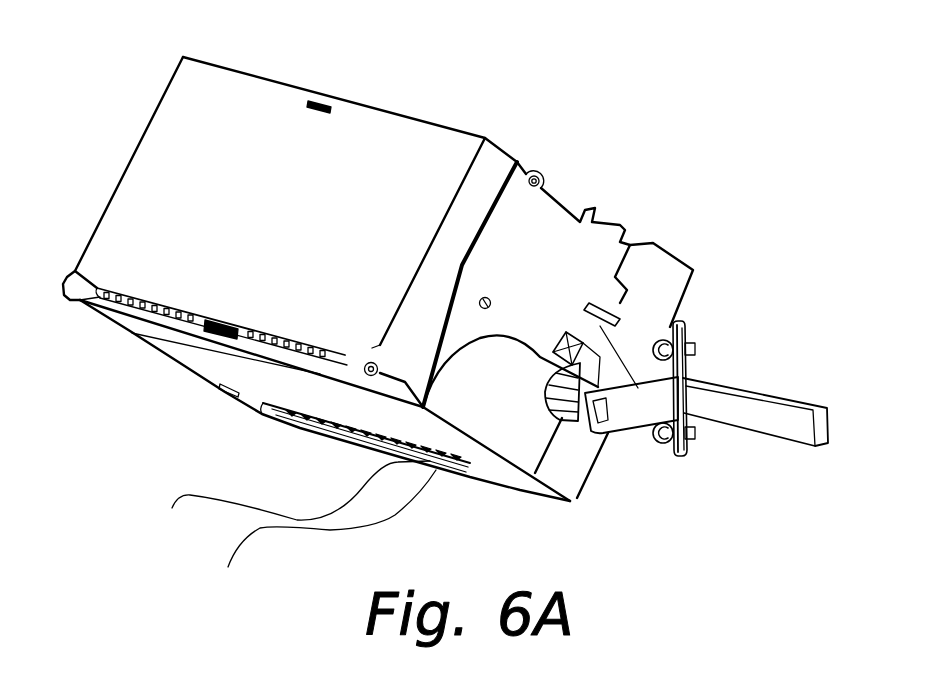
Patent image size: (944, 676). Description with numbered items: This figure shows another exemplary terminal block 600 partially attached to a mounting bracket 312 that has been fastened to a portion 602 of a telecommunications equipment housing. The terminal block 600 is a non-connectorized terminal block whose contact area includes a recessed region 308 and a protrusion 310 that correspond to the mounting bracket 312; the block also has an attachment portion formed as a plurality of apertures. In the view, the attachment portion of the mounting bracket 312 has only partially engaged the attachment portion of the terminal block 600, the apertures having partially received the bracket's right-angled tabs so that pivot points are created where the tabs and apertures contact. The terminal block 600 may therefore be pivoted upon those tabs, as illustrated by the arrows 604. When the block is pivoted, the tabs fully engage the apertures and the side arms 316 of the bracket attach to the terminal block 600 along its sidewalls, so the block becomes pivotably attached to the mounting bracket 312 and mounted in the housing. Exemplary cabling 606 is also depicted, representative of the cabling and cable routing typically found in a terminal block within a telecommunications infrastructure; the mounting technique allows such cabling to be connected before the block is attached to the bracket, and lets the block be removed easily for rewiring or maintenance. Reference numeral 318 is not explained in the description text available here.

The terminal block 600 is at (127, 47).
The portion of a telecommunications equipment housing 602 is at (792, 432).
The arrows 604 is at (68, 437).
The cabling 606 is at (371, 526).
The recessed region 308 is at (607, 358).
The protrusion 310 is at (578, 347).
The mounting bracket 312 is at (680, 377).
The side arms 316 is at (661, 399).
The latch bar 318 is at (627, 420).